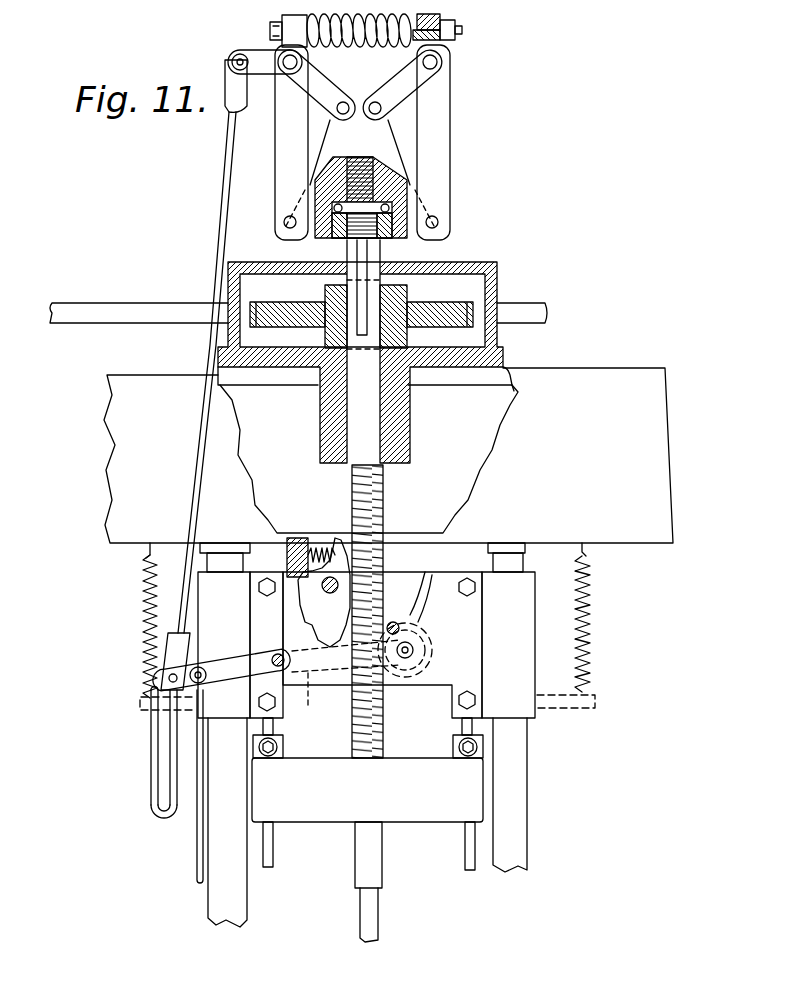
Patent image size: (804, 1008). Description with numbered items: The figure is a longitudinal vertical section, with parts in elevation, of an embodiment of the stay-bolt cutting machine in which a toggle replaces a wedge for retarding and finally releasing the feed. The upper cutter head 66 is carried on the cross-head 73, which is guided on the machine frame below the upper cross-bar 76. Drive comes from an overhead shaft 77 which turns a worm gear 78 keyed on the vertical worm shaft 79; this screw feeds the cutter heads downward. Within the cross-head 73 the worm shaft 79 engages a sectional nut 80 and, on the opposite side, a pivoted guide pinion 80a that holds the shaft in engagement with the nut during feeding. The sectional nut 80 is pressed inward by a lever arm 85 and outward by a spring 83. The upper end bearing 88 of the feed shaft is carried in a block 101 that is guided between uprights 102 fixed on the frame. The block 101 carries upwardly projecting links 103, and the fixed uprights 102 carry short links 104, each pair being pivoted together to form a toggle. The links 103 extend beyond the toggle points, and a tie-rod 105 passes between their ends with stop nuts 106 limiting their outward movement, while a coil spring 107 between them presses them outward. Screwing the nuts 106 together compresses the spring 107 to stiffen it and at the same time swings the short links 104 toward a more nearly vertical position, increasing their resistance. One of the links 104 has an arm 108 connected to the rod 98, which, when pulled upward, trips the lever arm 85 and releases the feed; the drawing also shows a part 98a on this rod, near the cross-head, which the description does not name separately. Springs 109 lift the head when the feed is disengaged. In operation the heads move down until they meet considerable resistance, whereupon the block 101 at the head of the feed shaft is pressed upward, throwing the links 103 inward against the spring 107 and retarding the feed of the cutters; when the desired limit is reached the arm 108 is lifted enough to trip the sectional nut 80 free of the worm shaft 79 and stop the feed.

The cutter head 66 is at (367, 790).
The cross-head 73 is at (392, 645).
The upper cross-bar 76 is at (388, 455).
The overhead shaft 77 is at (533, 299).
The worm gear 78 is at (436, 303).
The worm shaft 79 is at (372, 485).
The sectional nut 80 is at (336, 619).
The guide pinion 80a is at (405, 624).
The spring 83 is at (318, 538).
The lever arm 85 is at (315, 702).
The upper end bearing 88 is at (388, 263).
The rod 98 is at (199, 437).
The lever arm 98a is at (187, 649).
The block 101 is at (397, 195).
The uprights 102 is at (360, 173).
The links 103 is at (281, 151).
The links 104 is at (360, 85).
The tie-rod 105 is at (452, 36).
The stop nuts 106 is at (442, 22).
The coil spring 107 is at (355, 45).
The arm 108 is at (257, 52).
The springs 109 is at (160, 650).